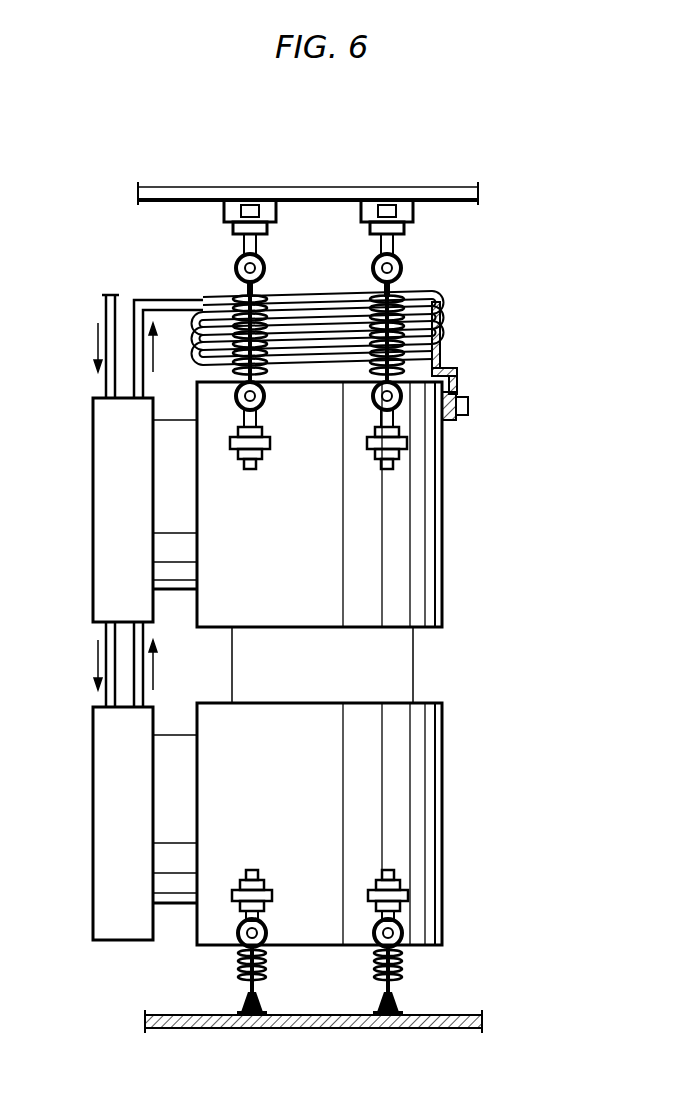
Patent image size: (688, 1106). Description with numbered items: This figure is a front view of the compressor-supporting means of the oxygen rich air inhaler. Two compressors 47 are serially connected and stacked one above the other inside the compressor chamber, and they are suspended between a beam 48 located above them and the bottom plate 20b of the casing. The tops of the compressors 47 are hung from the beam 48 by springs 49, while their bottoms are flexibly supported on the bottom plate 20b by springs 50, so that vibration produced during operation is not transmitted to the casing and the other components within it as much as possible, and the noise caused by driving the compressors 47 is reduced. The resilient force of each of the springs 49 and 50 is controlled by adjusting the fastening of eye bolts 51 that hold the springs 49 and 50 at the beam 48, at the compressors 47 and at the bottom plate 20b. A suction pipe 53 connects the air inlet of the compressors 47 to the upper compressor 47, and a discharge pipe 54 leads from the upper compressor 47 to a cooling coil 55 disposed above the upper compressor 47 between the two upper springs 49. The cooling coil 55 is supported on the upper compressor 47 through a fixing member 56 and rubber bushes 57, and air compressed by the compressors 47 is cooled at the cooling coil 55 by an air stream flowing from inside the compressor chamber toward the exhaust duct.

The bottom plate 20b is at (317, 1022).
The compressor 47 is at (428, 533).
The beam 48 is at (207, 195).
The spring 49 is at (258, 296).
The spring 50 is at (240, 962).
The eye bolt 51 is at (256, 250).
The suction pipe 53 is at (105, 310).
The discharge pipe 54 is at (167, 303).
The cooling coil 55 is at (320, 350).
The fixing member 56 is at (442, 333).
The rubber bush 57 is at (443, 415).